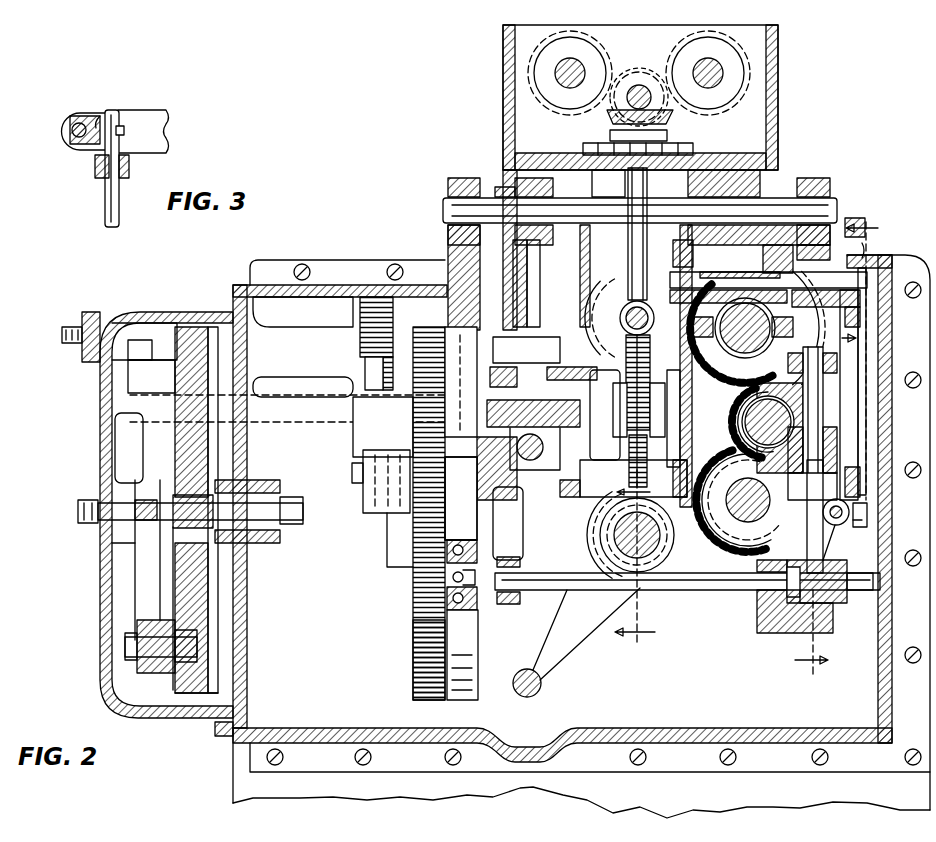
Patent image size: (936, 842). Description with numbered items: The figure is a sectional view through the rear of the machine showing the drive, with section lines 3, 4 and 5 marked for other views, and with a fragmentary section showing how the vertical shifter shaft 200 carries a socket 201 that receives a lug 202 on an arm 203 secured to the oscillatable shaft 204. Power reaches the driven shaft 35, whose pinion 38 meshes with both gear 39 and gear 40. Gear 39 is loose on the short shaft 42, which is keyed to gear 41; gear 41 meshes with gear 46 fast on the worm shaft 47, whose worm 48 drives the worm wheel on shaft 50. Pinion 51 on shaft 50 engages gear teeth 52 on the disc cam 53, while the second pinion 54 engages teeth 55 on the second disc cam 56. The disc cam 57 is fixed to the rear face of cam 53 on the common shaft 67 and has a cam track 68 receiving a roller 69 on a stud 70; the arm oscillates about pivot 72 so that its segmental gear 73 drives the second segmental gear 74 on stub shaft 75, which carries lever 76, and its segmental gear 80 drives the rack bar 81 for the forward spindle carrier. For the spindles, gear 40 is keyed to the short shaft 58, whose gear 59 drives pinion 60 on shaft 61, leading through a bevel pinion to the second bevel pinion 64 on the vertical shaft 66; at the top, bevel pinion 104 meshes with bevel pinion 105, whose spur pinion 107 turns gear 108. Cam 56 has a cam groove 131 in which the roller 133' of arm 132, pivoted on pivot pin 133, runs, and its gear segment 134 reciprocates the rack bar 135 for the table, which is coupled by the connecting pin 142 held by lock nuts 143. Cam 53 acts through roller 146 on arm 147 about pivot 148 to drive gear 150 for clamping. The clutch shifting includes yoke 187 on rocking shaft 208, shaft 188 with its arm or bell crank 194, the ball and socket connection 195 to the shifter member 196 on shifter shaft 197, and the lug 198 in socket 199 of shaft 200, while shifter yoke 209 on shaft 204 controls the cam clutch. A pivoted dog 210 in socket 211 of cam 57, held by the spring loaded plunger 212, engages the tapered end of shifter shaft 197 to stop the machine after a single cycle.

In FIG. 3, the vertical shifter shaft 200 is at (110, 195).
In FIG. 2, the vertical shifter shaft 200 is at (866, 440).
In FIG. 3, the socket 201 is at (119, 128).
In FIG. 3, the lug 202 is at (114, 115).
In FIG. 3, the arm 203 is at (98, 118).
In FIG. 2, the arm 203 is at (866, 250).
In FIG. 3, the oscillatable shaft 204 is at (78, 146).
In FIG. 2, the oscillatable shaft 204 is at (850, 232).
In FIG. 2, the section line 3— 3 is at (866, 360).
In FIG. 2, the section line 4— 4 is at (803, 569).
In FIG. 2, the section line 5— 5 is at (626, 556).
In FIG. 2, the driven shaft 35 is at (812, 450).
In FIG. 2, the pinion 38 is at (745, 423).
In FIG. 2, the gear 39 is at (728, 385).
In FIG. 2, the gear 40 is at (775, 570).
In FIG. 2, the gear 41 is at (805, 320).
In FIG. 2, the short shaft 42 is at (748, 340).
In FIG. 2, the gear 46 is at (620, 282).
In FIG. 2, the worm shaft 47 is at (628, 314).
In FIG. 2, the worm 48 is at (626, 320).
In FIG. 2, the shaft 50 is at (536, 436).
In FIG. 2, the pinion 51 is at (425, 328).
In FIG. 2, the gear teeth 52 is at (435, 682).
In FIG. 2, the disc cam 53 is at (418, 668).
In FIG. 2, the second pinion 54 is at (190, 360).
In FIG. 2, the teeth 55 is at (198, 330).
In FIG. 2, the second disc cam 56 is at (185, 688).
In FIG. 2, the disc cam 57 is at (493, 680).
In FIG. 2, the short shaft 58 is at (745, 480).
In FIG. 2, the gear 59 is at (740, 440).
In FIG. 2, the pinion 60 is at (660, 572).
In FIG. 2, the shaft 61 is at (632, 528).
In FIG. 2, the second bevel pinion 64 is at (605, 500).
In FIG. 2, the vertical shaft 66 is at (628, 182).
In FIG. 2, the common shaft 67 is at (505, 520).
In FIG. 2, the cam track 68 is at (460, 480).
In FIG. 2, the roller 69 is at (500, 484).
In FIG. 2, the stud 70 is at (505, 460).
In FIG. 2, the pivot 72 is at (542, 340).
In FIG. 2, the segmental gear 73 is at (533, 290).
In FIG. 2, the second segmental gear 74 is at (528, 268).
In FIG. 2, the stub shaft 75 is at (450, 204).
In FIG. 2, the lever 76 is at (478, 178).
In FIG. 2, the segmental gear 80 is at (544, 402).
In FIG. 2, the rack bar 81 is at (540, 458).
In FIG. 2, the bevel pinion 104 is at (612, 118).
In FIG. 2, the bevel pinion 105 is at (672, 128).
In FIG. 2, the spur pinion 107 is at (662, 105).
In FIG. 2, the gear 108 is at (570, 95).
In FIG. 2, the cam groove 131 is at (200, 640).
In FIG. 2, the arm 132 is at (140, 575).
In FIG. 2, the pivot pin 133 is at (184, 533).
In FIG. 2, the roller 133' is at (209, 639).
In FIG. 2, the gear segment 134 is at (128, 432).
In FIG. 2, the rack bar 135 is at (135, 380).
In FIG. 2, the connecting pin 142 is at (66, 328).
In FIG. 2, the lock nuts 143 is at (86, 312).
In FIG. 2, the roller 146 is at (395, 512).
In FIG. 2, the arm 147 is at (372, 368).
In FIG. 2, the pivot 148 is at (368, 415).
In FIG. 2, the gear 150 is at (368, 312).
In FIG. 2, the yoke 187 is at (812, 372).
In FIG. 2, the shaft 188 is at (848, 503).
In FIG. 2, the arm or bell crank 194 is at (840, 545).
In FIG. 2, the ball and socket connection 195 is at (838, 565).
In FIG. 2, the shifter member 196 is at (830, 606).
In FIG. 2, the shifter shaft 197 is at (706, 592).
In FIG. 2, the lug 198 is at (868, 510).
In FIG. 2, the socket 199 is at (866, 523).
In FIG. 2, the rocking shaft 208 is at (815, 400).
In FIG. 2, the shifter yoke 209 is at (700, 272).
In FIG. 2, the pivoted dog 210 is at (452, 553).
In FIG. 2, the socket 211 is at (452, 578).
In FIG. 2, the spring loaded plunger 212 is at (478, 597).